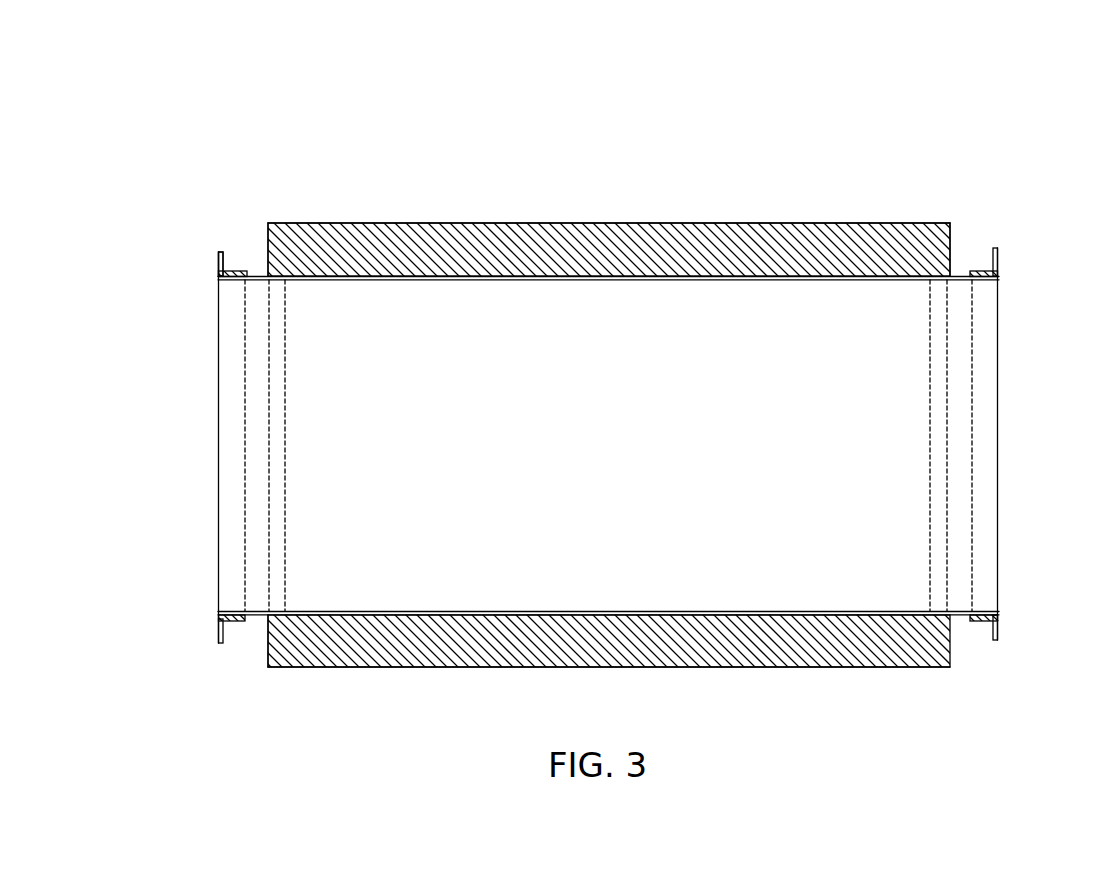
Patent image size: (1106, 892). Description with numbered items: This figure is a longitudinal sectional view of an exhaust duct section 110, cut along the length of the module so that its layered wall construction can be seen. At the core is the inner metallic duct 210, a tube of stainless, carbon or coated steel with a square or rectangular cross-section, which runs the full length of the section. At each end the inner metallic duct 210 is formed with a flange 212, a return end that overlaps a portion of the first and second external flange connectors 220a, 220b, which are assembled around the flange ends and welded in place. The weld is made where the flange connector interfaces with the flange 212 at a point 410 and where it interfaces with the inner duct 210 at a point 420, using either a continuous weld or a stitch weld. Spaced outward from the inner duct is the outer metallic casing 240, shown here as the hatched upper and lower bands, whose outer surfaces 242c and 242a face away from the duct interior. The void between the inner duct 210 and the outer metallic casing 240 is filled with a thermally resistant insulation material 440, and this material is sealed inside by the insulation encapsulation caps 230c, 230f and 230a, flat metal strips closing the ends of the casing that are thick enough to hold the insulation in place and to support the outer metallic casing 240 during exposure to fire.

The exhaust duct section 110 is at (828, 132).
The inner metallic duct 210 is at (890, 440).
The flange 212 is at (218, 277).
The first external flange connector 220a is at (218, 262).
The second external flange connector 220b is at (1000, 254).
The insulation encapsulation cap 230a is at (268, 652).
The insulation encapsulation cap 230c is at (268, 233).
The insulation encapsulation cap 230f is at (950, 250).
The outer metallic casing 240 is at (665, 206).
The bottom outer surface 242a is at (455, 668).
The top outer surface 242c is at (480, 224).
The weld point 410 is at (208, 246).
The weld point 420 is at (243, 278).
The thermally resistant insulation material 440 is at (392, 252).